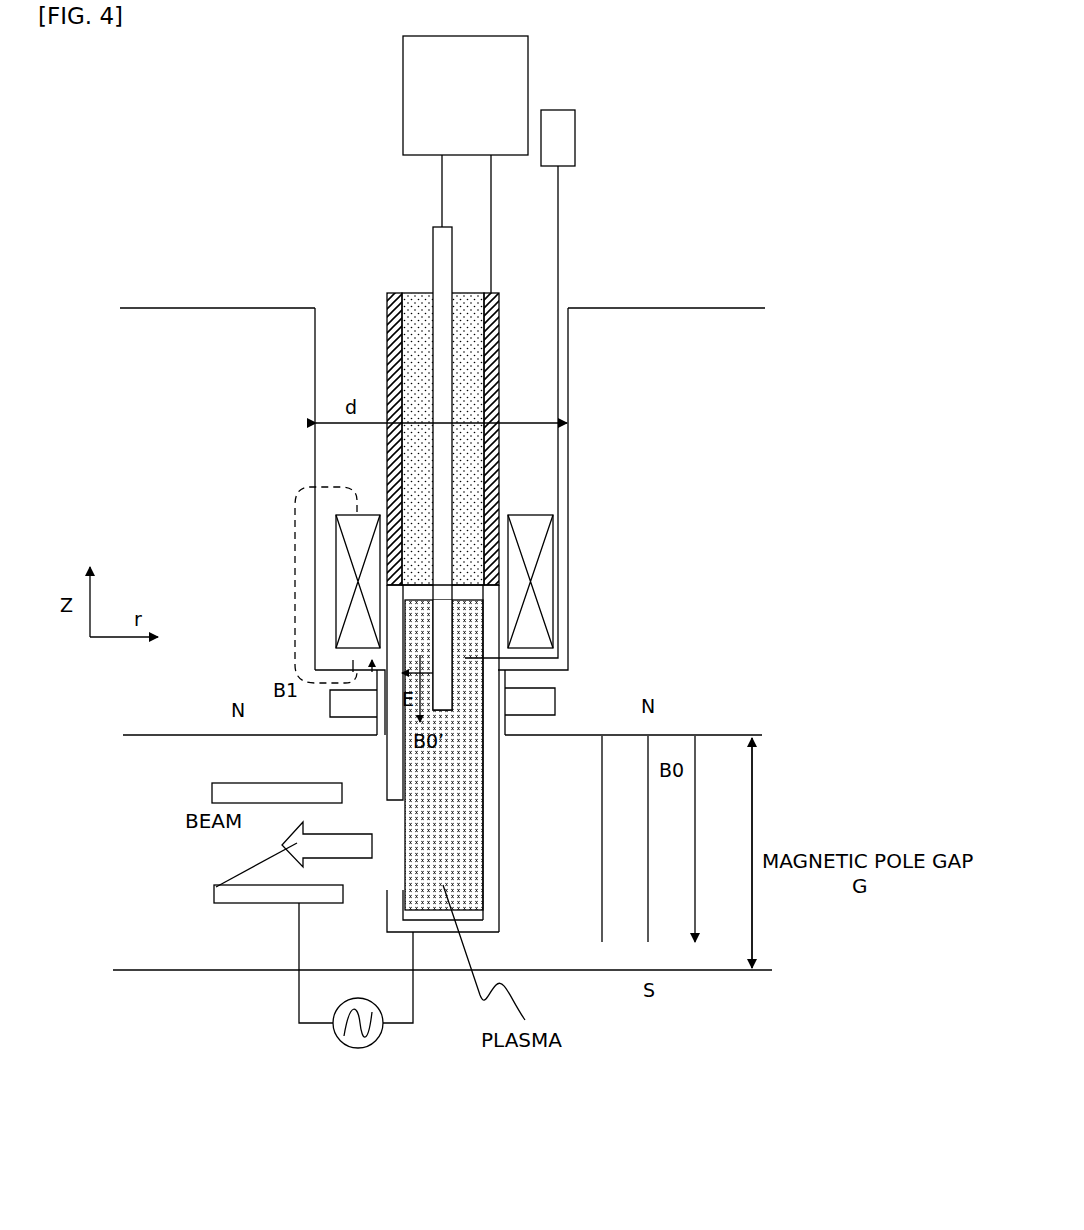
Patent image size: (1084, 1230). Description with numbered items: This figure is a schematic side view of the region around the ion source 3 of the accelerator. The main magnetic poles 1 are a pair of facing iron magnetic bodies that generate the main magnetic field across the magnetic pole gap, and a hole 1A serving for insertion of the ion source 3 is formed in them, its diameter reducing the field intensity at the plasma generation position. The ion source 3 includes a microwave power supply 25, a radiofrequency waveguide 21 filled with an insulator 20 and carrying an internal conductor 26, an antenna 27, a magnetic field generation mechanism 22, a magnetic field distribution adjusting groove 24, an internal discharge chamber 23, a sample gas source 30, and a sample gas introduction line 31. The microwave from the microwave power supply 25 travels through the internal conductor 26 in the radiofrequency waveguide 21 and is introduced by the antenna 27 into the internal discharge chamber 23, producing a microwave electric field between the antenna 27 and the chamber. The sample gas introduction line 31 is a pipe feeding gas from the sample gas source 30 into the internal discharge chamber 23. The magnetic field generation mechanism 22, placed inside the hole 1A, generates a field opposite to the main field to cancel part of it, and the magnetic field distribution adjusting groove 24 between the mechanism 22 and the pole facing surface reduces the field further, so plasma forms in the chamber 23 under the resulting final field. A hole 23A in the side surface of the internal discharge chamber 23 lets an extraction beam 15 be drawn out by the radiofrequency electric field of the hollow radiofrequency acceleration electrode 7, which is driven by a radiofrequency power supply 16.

The main magnetic poles 1 is at (220, 308).
The hole 1A is at (350, 358).
The ion source 3 is at (302, 198).
The radiofrequency acceleration electrode 7 is at (252, 782).
The extraction beam 15 is at (215, 887).
The radiofrequency power supply 16 is at (340, 1040).
The insulator 20 is at (470, 330).
The radiofrequency waveguide 21 is at (500, 360).
The magnetic field generation mechanism 22 is at (343, 568).
The internal discharge chamber 23 is at (498, 890).
The hole 23A is at (393, 860).
The magnetic field distribution adjusting groove 24 is at (560, 690).
The microwave power supply 25 is at (513, 94).
The internal conductor 26 is at (441, 270).
The antenna 27 is at (442, 636).
The sample gas source 30 is at (560, 138).
The sample gas introduction line 31 is at (558, 198).